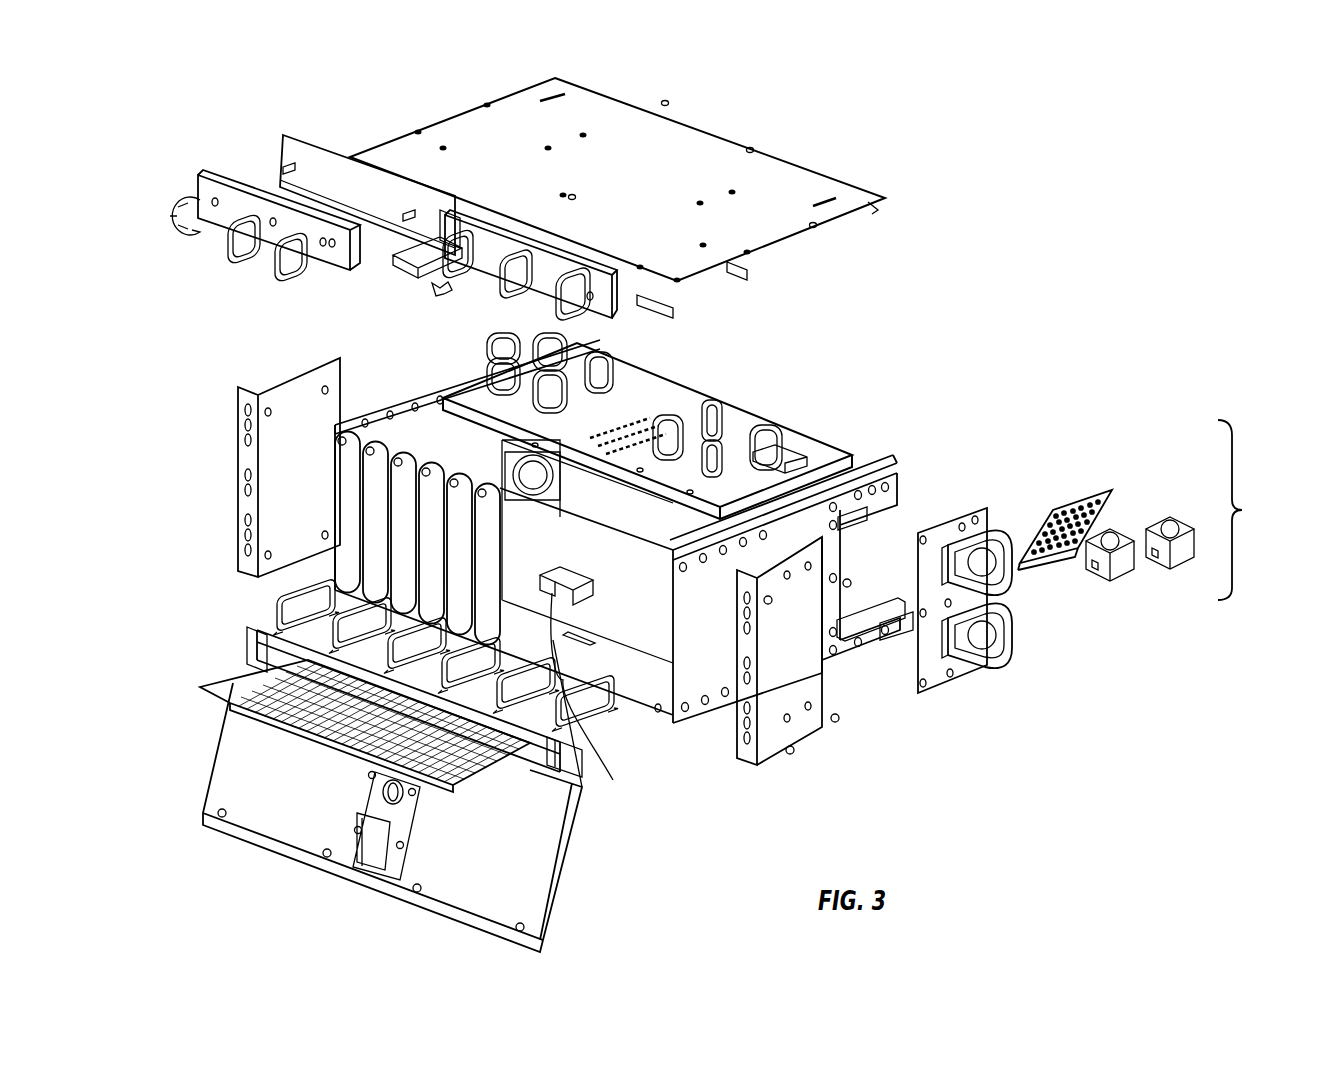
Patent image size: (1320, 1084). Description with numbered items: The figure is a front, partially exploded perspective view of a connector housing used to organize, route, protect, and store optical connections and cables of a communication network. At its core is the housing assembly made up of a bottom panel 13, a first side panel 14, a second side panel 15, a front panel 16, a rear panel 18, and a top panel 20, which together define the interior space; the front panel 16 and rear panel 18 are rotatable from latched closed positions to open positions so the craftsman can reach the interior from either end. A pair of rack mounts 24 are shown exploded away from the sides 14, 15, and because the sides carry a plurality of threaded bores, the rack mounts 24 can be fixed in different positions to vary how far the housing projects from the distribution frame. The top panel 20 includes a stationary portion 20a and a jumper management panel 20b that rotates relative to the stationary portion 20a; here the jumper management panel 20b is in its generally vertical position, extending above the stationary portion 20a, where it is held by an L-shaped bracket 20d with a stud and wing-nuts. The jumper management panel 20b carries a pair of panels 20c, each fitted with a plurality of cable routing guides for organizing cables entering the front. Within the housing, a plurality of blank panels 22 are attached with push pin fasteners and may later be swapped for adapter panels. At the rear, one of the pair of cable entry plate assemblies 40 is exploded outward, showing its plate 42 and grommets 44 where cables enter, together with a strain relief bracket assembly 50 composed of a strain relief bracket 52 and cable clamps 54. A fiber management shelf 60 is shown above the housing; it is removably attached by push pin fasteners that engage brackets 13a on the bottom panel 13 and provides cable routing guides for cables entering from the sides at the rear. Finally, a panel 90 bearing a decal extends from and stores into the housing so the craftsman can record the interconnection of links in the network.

The bottom panel 13 is at (652, 665).
The brackets 13a is at (580, 740).
The first side panel 14 is at (700, 735).
The second side panel 15 is at (445, 390).
The front panel 16 is at (540, 862).
The rear panel 18 is at (890, 545).
The top panel 20 is at (768, 183).
The stationary portion 20a is at (470, 137).
The jumper management panel 20b is at (290, 152).
The panels 20c is at (323, 267).
The bracket 20d is at (405, 257).
The blank panels 22 is at (370, 563).
The rack mounts 24 is at (245, 503).
The cable entry plate assembly 40 is at (1155, 687).
The plate 42 is at (905, 632).
The grommet 44 is at (1010, 665).
The strain relief bracket assembly 50 is at (1143, 510).
The strain relief bracket 52 is at (1075, 492).
The cable clamp 54 is at (1145, 565).
The fiber management shelf 60 is at (640, 395).
The panel 90 is at (235, 677).